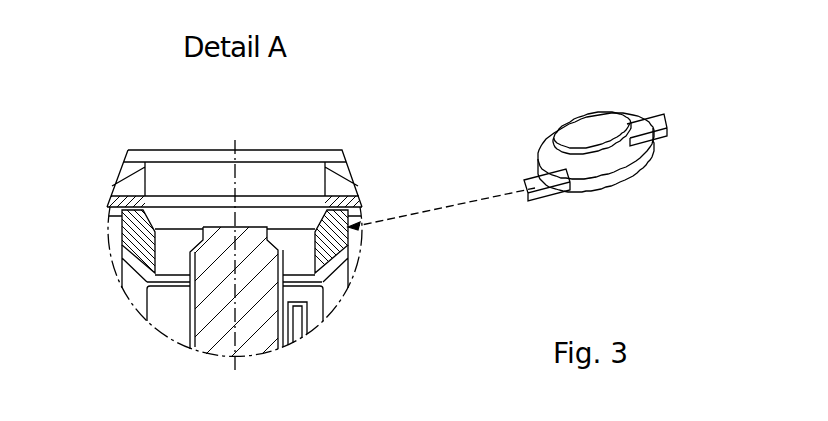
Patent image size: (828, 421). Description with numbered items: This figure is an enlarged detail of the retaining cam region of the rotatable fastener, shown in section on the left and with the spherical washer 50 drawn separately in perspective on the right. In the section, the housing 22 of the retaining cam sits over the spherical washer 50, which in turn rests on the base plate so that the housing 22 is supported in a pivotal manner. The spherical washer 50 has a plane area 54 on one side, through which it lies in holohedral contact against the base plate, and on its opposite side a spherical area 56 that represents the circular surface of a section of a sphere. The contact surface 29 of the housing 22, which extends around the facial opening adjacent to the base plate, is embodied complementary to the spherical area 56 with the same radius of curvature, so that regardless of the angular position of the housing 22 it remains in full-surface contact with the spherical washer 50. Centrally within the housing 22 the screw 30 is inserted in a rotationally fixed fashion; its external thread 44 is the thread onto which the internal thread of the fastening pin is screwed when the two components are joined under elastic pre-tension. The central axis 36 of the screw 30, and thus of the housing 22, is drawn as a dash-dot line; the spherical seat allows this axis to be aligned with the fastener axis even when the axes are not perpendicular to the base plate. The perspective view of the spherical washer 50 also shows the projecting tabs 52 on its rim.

The housing 22 is at (335, 292).
The contact surface 29 is at (130, 260).
The screw 30 is at (222, 327).
The central axis 36 is at (235, 180).
The external thread 44 is at (222, 312).
The spherical washer 50 is at (345, 247).
The tabs 52 is at (538, 175).
The plane area 54 is at (125, 205).
The spherical area 56 is at (628, 155).